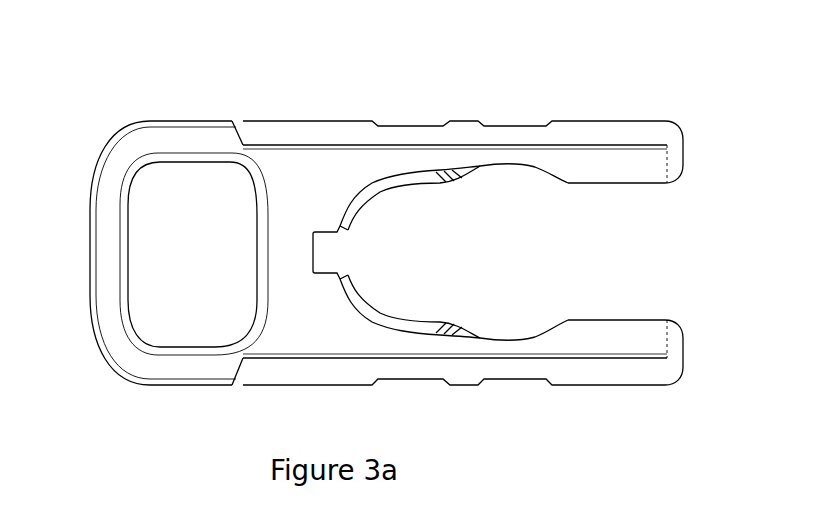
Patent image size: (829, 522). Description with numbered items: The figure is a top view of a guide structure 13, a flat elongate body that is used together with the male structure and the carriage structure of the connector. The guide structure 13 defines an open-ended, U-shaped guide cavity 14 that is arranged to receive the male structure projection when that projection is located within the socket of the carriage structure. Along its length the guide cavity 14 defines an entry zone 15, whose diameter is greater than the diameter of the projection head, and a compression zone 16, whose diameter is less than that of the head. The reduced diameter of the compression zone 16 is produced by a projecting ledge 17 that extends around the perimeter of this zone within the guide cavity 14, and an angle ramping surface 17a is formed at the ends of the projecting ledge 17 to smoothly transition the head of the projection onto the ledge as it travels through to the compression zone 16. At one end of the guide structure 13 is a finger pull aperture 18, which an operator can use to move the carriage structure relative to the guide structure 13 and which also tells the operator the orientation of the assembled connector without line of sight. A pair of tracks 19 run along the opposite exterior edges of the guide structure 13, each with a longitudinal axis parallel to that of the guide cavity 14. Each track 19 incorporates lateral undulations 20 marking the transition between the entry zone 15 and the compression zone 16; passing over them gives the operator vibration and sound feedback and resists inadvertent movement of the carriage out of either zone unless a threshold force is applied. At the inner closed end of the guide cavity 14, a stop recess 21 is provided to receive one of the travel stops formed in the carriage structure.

The guide structure 13 is at (647, 402).
The open-ended guide cavity 14 is at (645, 248).
The entry zone 15 is at (530, 218).
The compression zone 16 is at (410, 237).
The projecting ledge 17 is at (350, 203).
The angle ramping surface 17a is at (452, 323).
The finger pull aperture 18 is at (147, 293).
The track 19 is at (550, 405).
The lateral undulation 20 is at (465, 110).
The stop recess 21 is at (332, 257).